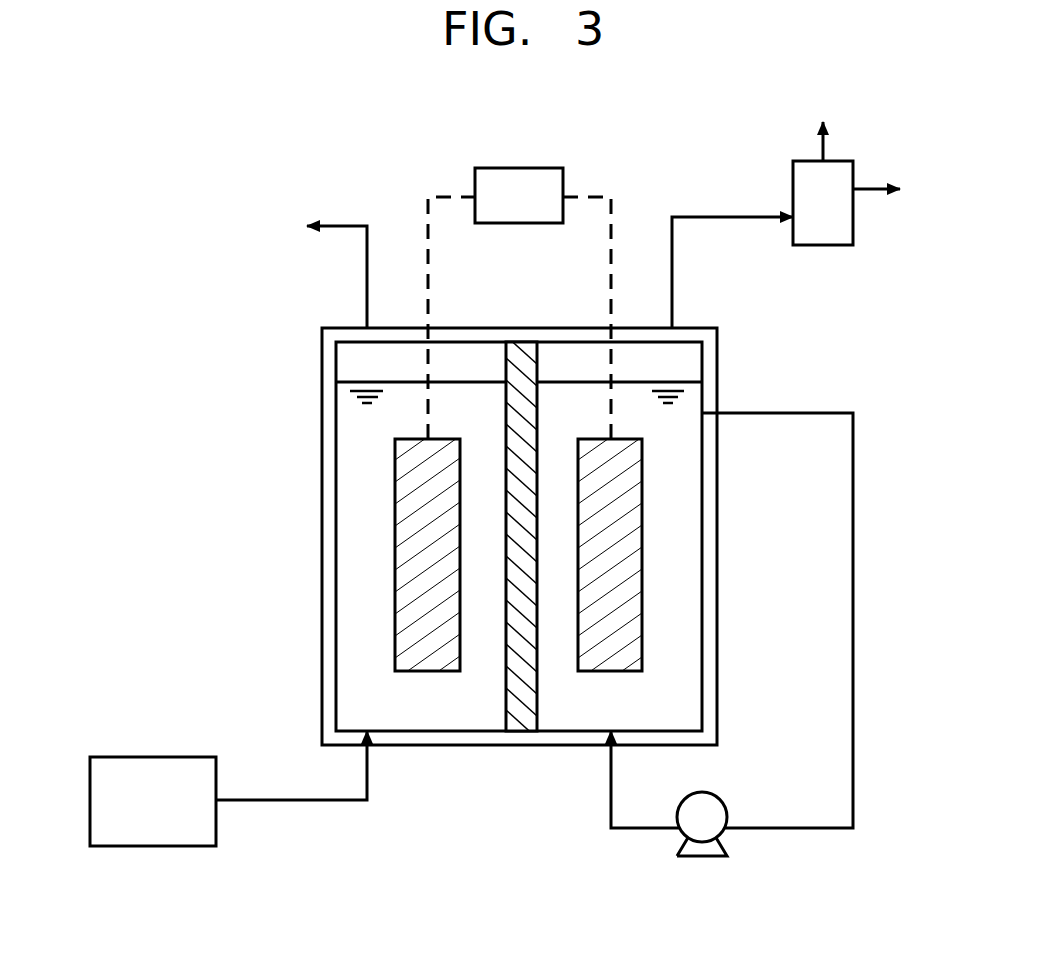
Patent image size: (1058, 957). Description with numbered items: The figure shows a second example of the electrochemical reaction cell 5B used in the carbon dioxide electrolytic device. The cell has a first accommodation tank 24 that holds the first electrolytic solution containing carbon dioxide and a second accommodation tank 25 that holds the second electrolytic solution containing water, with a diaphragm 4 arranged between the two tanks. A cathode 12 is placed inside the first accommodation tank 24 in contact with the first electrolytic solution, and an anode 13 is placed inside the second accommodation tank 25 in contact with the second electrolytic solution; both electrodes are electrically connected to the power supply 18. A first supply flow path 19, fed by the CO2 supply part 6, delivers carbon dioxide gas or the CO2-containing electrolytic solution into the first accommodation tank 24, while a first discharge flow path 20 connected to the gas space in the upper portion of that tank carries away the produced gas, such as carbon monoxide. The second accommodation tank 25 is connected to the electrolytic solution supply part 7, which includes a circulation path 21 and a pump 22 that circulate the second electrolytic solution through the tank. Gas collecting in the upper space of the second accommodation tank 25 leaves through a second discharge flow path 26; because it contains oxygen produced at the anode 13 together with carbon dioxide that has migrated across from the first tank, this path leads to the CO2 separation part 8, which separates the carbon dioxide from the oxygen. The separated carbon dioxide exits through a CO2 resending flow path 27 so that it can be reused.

The diaphragm 4 is at (528, 345).
The electrochemical reaction cell 5B is at (520, 760).
The CO2 supply part 6 is at (152, 757).
The electrolytic solution supply part 7 is at (885, 512).
The CO2 separation part 8 is at (853, 226).
The cathode 12 is at (428, 497).
The anode 13 is at (618, 494).
The power supply 18 is at (475, 173).
The first supply flow path 19 is at (280, 800).
The first discharge flow path 20 is at (345, 226).
The circulation path 21 is at (853, 730).
The pump 22 is at (700, 859).
The first accommodation tank 24 is at (355, 578).
The second accommodation tank 25 is at (680, 582).
The second discharge flow path 26 is at (718, 219).
The CO2 resending flow path 27 is at (823, 143).